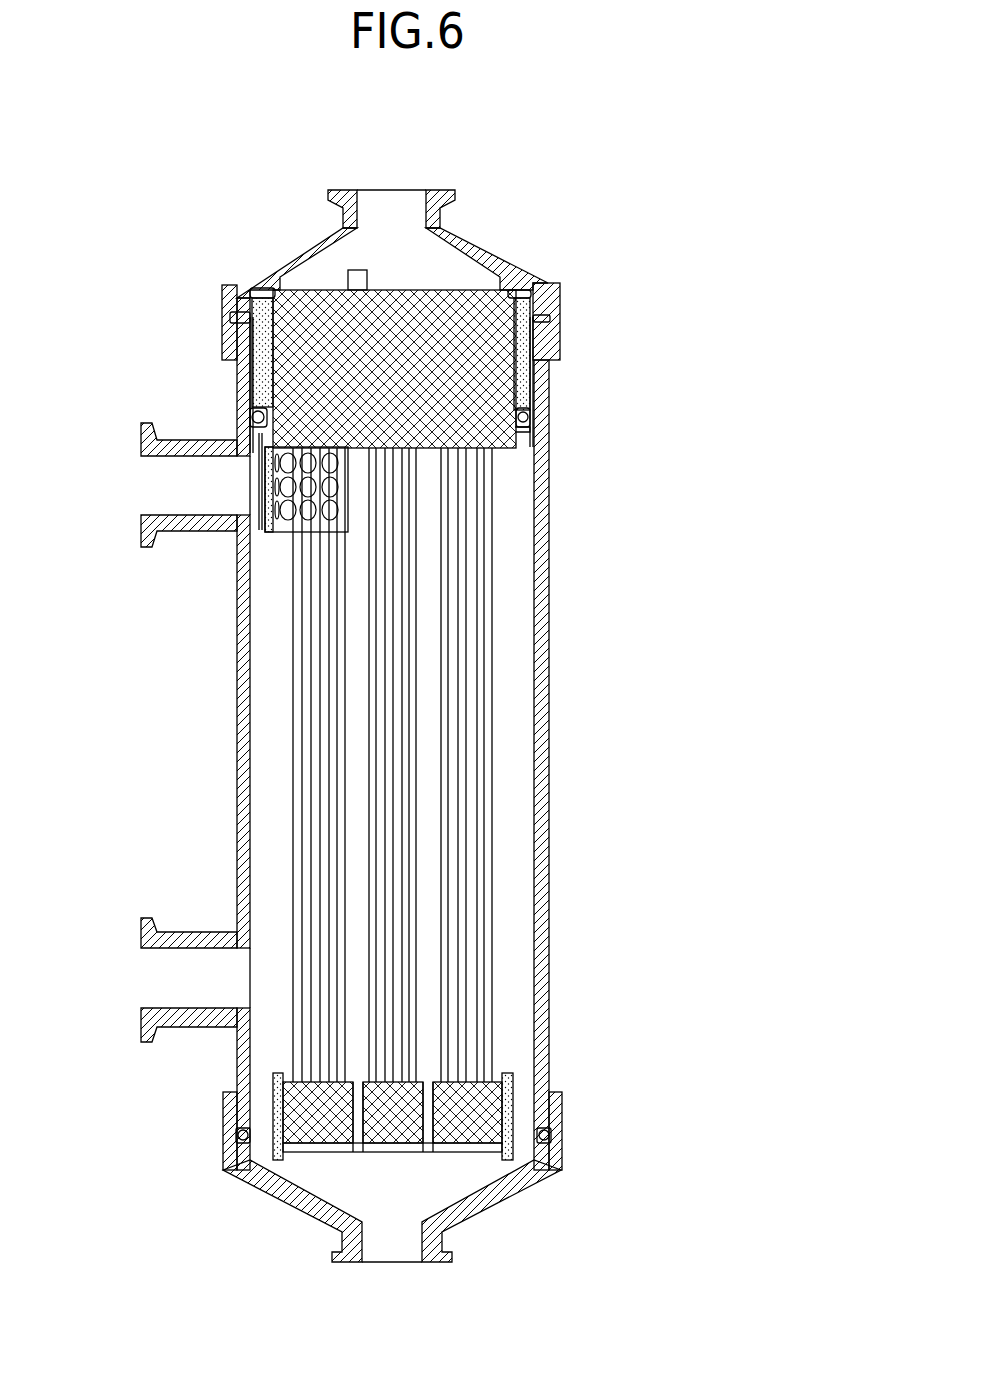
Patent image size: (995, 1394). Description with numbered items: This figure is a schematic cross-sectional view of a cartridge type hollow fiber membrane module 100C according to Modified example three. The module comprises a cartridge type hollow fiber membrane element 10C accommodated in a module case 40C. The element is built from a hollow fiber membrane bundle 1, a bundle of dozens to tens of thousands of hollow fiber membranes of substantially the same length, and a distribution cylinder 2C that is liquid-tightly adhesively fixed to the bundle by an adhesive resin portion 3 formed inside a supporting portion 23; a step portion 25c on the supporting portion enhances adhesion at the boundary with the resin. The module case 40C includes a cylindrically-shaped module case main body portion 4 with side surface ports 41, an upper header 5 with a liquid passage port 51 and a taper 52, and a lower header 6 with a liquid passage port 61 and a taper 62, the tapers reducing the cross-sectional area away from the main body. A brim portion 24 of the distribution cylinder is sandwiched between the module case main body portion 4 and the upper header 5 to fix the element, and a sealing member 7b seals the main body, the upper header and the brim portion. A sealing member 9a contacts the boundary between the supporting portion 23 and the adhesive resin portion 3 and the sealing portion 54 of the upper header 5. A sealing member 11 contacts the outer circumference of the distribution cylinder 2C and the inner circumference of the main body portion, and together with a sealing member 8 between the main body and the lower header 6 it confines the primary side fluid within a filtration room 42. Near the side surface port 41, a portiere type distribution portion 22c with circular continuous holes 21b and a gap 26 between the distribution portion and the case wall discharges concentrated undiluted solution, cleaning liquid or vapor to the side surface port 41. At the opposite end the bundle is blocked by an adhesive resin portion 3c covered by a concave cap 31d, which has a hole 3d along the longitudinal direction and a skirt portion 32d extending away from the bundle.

The cartridge type hollow fiber membrane module 100C is at (383, 158).
The cartridge type hollow fiber membrane element 10C is at (318, 262).
The taper 52 is at (338, 242).
The liquid passage port 51 is at (416, 195).
The sealing portion 54 is at (260, 289).
The upper header 5 is at (473, 248).
The sealing member 9a is at (537, 289).
The brim portion 24 is at (549, 300).
The sealing member 7b is at (540, 318).
The step portion 25c is at (530, 372).
The supporting portion 23 is at (530, 390).
The sealing member 11 is at (532, 420).
The adhesive resin portion 3 is at (510, 443).
The distribution cylinder 2C is at (243, 391).
The gap 26 is at (255, 440).
The side surface port 41 is at (193, 535).
The distribution portion 22c is at (240, 567).
The continuous hole 21b is at (282, 500).
The filtration room 42 is at (510, 588).
The module case 40C is at (588, 627).
The module case main body portion 4 is at (540, 677).
The hollow fiber membrane bundle 1 is at (480, 738).
The adhesive resin portion 3c is at (505, 1092).
The cap 31d is at (505, 1117).
The sealing member 8 is at (550, 1138).
The skirt portion 32d is at (515, 1152).
The lower header 6 is at (490, 1195).
The taper 62 is at (296, 1182).
The hole 3d is at (425, 1138).
The liquid passage port 61 is at (418, 1263).